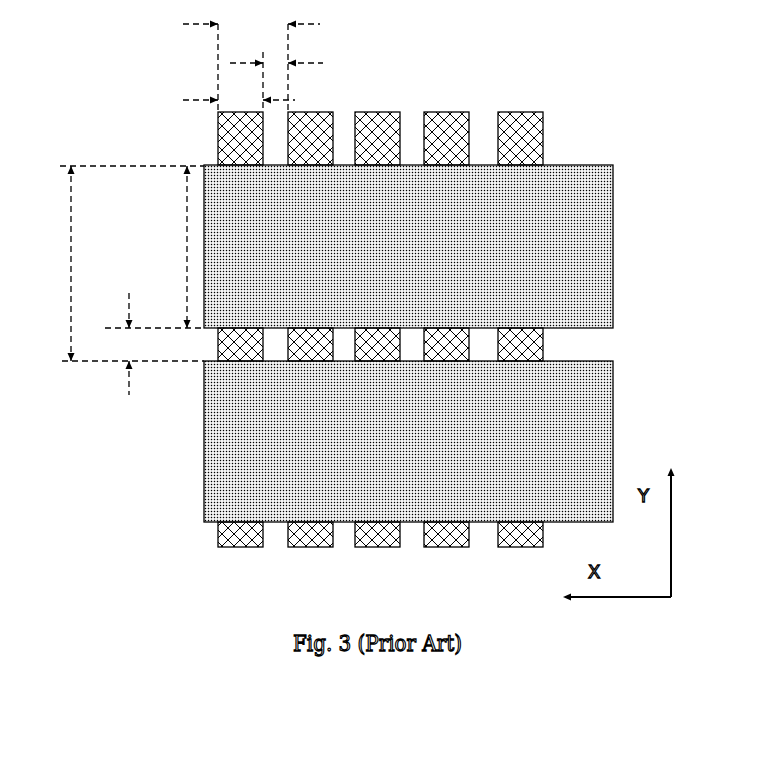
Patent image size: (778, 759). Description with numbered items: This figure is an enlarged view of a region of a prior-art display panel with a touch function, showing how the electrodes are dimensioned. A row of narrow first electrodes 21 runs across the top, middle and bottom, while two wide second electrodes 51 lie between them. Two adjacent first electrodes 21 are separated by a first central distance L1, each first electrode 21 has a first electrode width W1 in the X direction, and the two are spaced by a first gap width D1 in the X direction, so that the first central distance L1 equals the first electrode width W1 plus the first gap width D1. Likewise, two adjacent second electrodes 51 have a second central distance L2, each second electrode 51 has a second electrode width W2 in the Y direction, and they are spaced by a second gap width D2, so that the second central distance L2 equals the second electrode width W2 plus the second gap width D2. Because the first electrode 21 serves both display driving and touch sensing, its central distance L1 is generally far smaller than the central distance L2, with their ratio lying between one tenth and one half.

The first electrode 21 is at (523, 135).
The second electrode 51 is at (543, 263).
The first central distance L1 is at (242, 63).
The first gap width D1 is at (288, 81).
The first electrode width W1 is at (229, 102).
The second central distance L2 is at (123, 263).
The second electrode width W2 is at (154, 247).
The second gap width D2 is at (132, 344).